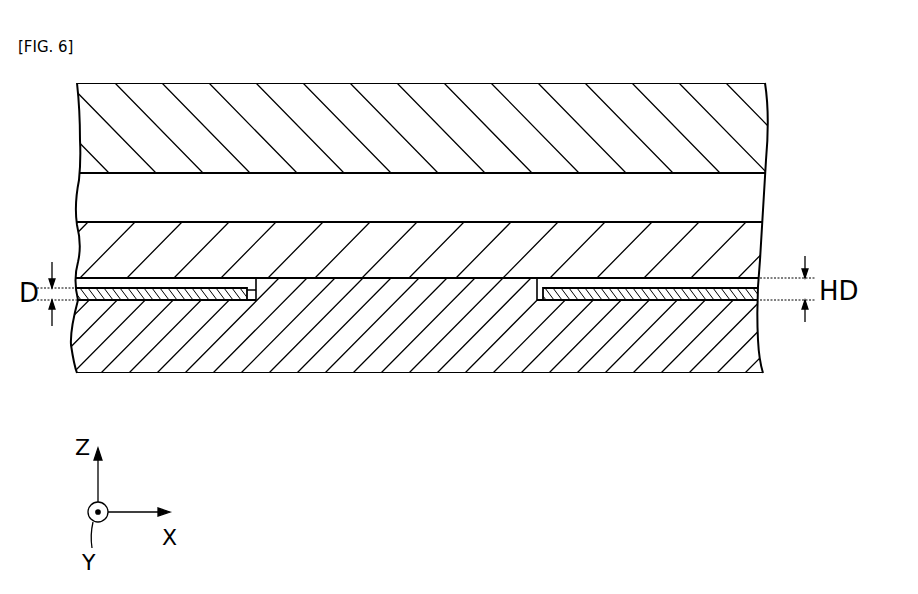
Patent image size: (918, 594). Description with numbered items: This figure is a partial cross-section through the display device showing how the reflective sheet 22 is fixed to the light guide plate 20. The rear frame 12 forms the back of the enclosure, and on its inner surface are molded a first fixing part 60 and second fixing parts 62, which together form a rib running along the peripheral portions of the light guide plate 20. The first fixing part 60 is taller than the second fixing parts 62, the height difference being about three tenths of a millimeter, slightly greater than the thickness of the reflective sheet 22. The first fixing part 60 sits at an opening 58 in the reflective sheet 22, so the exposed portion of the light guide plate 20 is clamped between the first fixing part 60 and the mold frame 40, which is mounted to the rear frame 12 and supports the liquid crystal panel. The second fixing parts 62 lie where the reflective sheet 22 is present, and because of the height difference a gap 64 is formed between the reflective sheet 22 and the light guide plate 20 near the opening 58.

The rear frame 12 is at (743, 353).
The light guide plate 20 is at (762, 240).
The reflective sheet 22 is at (737, 241).
The mold frame 40 is at (743, 128).
The opening 58 is at (259, 293).
The first fixing part 60 is at (371, 318).
The second fixing part 62 is at (143, 340).
The gap 64 is at (195, 295).